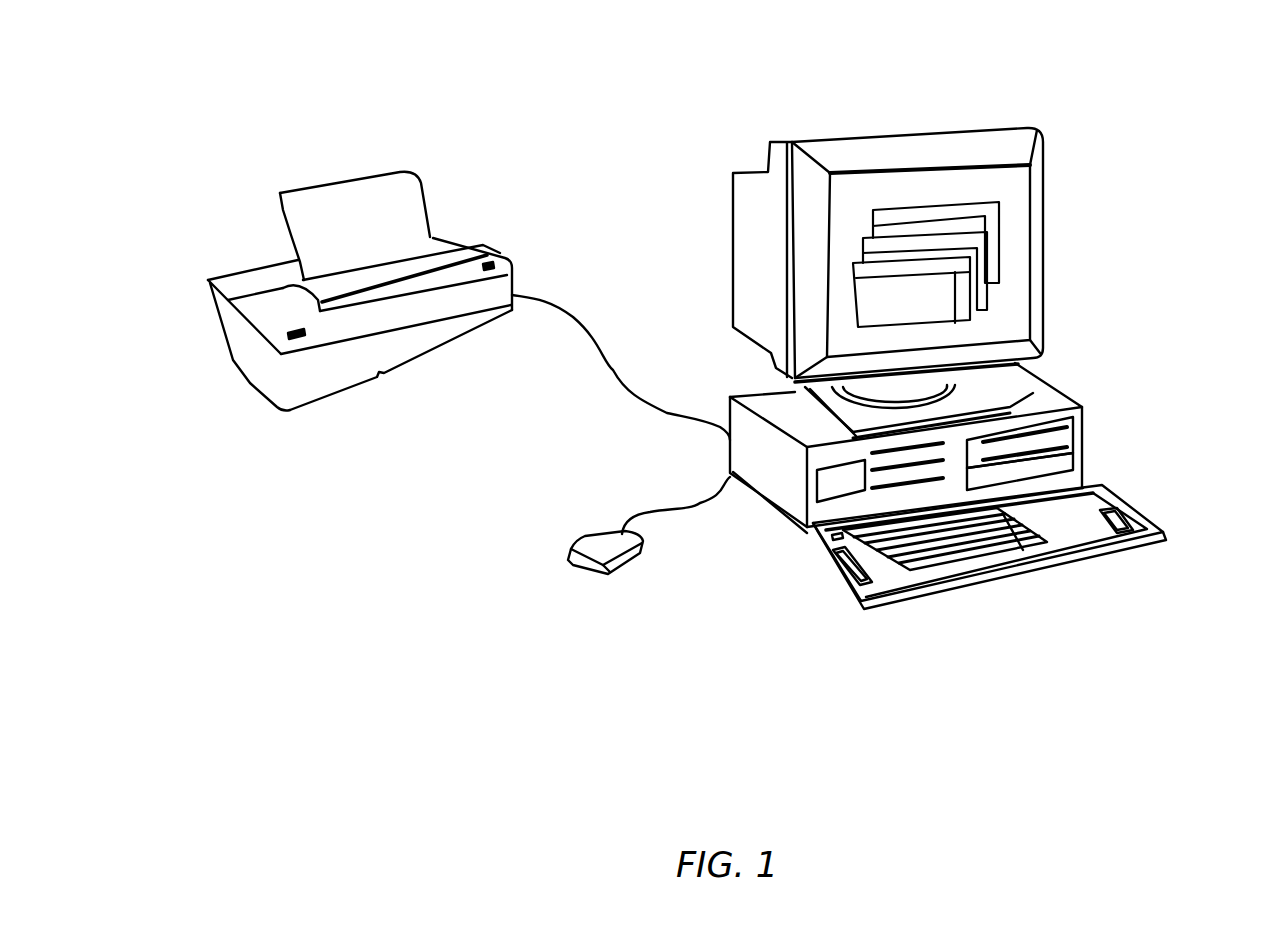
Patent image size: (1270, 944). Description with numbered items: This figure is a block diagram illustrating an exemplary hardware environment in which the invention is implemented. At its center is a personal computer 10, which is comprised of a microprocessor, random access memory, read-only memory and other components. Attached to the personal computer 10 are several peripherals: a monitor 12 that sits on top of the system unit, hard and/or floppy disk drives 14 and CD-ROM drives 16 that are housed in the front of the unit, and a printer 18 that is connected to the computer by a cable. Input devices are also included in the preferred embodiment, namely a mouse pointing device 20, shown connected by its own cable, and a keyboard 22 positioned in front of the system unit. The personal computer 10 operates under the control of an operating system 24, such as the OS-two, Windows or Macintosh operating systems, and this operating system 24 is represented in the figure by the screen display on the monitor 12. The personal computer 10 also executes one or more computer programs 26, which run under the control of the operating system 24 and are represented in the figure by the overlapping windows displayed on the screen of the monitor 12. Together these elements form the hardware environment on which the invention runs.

The personal computer 10 is at (972, 435).
The monitor 12 is at (943, 234).
The hard and/or floppy disk drives 14 is at (1070, 431).
The CD-ROM drives 16 is at (1072, 463).
The printer 18 is at (473, 240).
The mouse pointing device 20 is at (612, 558).
The keyboard 22 is at (1100, 548).
The operating system 24 is at (848, 193).
The computer programs 26 is at (1013, 245).